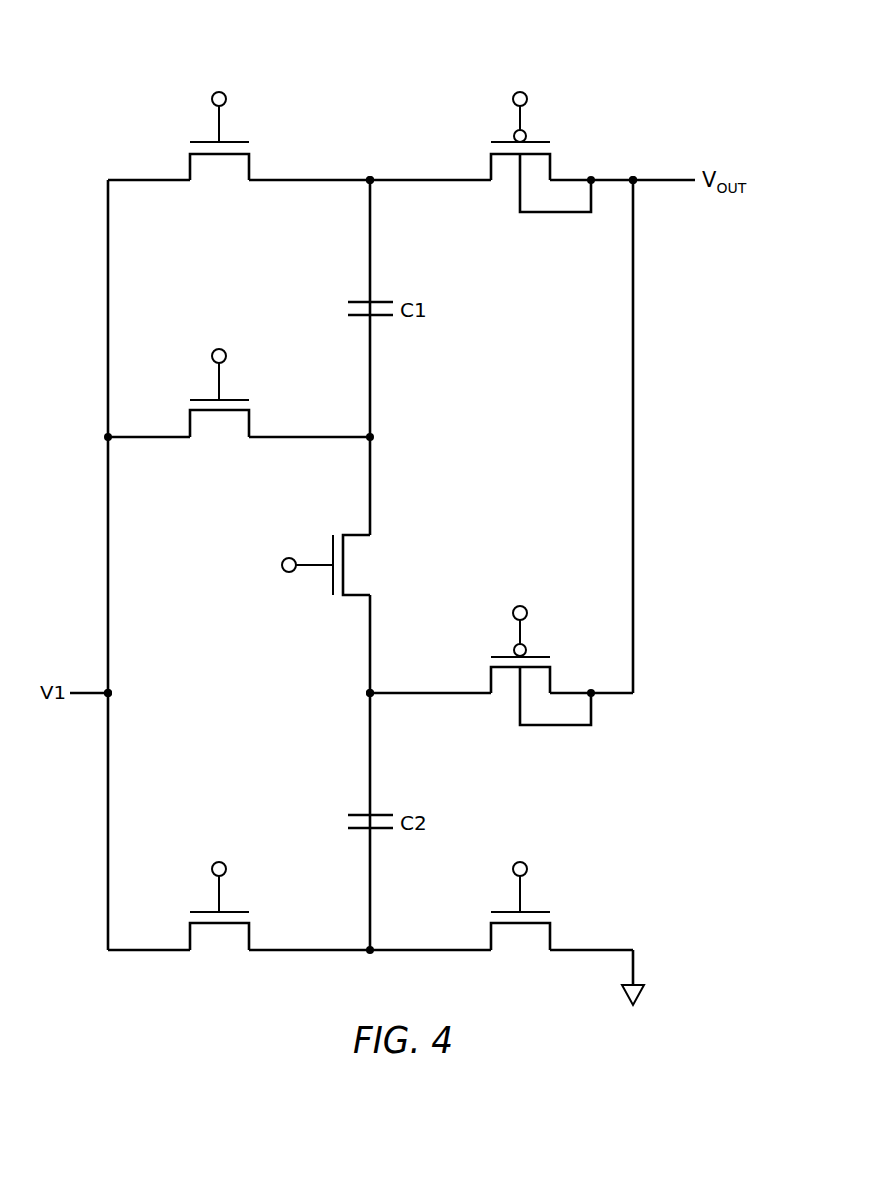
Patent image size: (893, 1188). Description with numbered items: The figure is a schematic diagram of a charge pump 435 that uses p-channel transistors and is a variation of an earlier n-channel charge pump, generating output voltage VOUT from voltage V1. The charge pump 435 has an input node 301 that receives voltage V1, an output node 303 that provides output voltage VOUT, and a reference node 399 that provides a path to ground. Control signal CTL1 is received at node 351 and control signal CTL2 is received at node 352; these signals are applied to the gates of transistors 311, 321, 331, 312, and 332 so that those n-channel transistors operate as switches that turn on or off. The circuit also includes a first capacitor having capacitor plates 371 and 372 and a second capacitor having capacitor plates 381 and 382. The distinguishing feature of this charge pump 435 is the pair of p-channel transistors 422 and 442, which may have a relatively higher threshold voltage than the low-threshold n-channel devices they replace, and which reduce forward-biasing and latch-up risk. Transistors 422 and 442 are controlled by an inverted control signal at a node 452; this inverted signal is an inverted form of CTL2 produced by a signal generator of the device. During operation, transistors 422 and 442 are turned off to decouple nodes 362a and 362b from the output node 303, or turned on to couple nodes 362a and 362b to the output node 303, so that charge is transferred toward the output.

The charge pump 435 is at (655, 60).
The transistor 311 is at (250, 166).
The transistor 312 is at (250, 423).
The transistor 321 is at (356, 598).
The transistor 331 is at (551, 936).
The transistor 332 is at (250, 936).
The transistor 422 is at (551, 166).
The transistor 442 is at (551, 679).
The node 351 is at (226, 99).
The node 352 is at (226, 356).
The node 452 is at (527, 99).
The node 362a is at (372, 175).
The node 362b is at (366, 693).
The output node 303 is at (635, 176).
The input node 301 is at (114, 693).
The capacitor plate 371 is at (363, 300).
The capacitor plate 372 is at (380, 318).
The capacitor plate 381 is at (363, 813).
The capacitor plate 382 is at (380, 831).
The reference node 399 is at (641, 998).